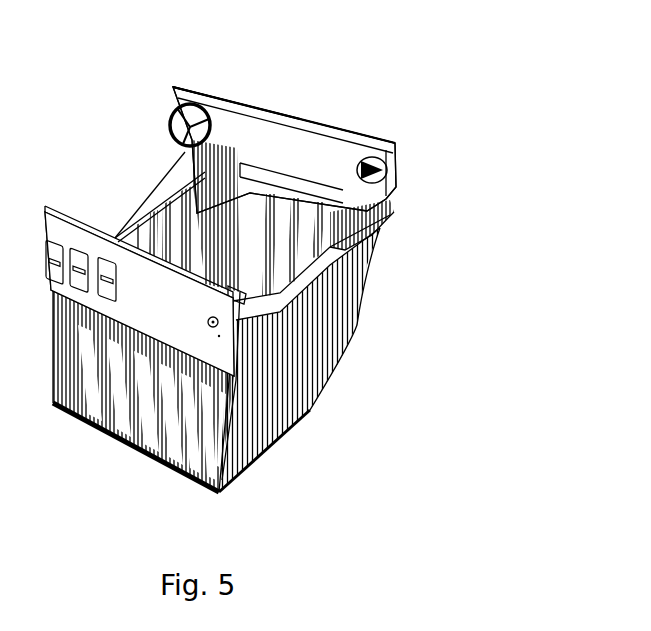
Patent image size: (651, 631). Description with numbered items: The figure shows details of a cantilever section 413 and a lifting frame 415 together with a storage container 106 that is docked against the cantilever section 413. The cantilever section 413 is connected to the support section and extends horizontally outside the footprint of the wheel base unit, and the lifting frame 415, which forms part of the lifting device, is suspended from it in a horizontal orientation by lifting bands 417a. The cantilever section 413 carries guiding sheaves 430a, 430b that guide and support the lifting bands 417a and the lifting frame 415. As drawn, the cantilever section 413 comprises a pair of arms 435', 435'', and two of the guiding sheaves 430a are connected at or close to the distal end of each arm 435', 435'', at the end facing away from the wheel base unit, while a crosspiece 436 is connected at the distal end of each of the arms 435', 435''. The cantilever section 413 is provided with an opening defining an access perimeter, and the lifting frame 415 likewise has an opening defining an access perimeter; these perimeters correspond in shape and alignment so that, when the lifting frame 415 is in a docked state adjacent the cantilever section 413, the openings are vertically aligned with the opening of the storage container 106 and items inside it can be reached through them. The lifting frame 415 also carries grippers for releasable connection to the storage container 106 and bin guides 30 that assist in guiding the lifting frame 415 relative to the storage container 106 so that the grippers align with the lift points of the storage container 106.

The bin guides 30 is at (237, 393).
The storage container 106 is at (320, 343).
The cantilever section 413 is at (440, 141).
The lifting frame 415 is at (330, 272).
The lifting bands 417a is at (287, 130).
The guiding sheaves 430a is at (370, 157).
The guiding sheaves 430b is at (191, 128).
The arm 435' is at (240, 80).
The arm 435'' is at (131, 252).
The crosspiece 436 is at (363, 213).